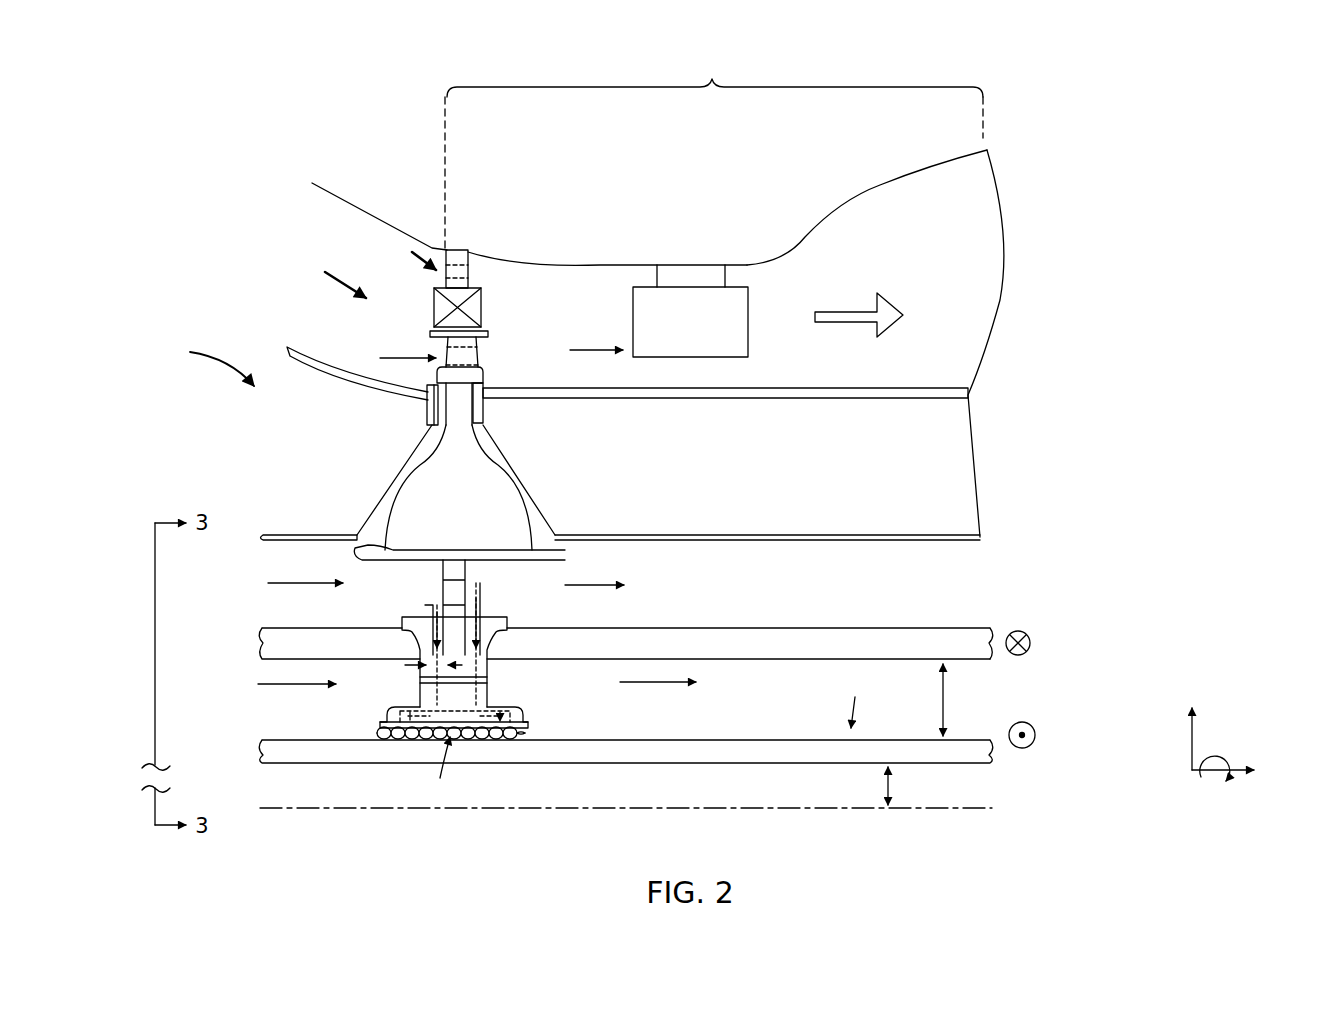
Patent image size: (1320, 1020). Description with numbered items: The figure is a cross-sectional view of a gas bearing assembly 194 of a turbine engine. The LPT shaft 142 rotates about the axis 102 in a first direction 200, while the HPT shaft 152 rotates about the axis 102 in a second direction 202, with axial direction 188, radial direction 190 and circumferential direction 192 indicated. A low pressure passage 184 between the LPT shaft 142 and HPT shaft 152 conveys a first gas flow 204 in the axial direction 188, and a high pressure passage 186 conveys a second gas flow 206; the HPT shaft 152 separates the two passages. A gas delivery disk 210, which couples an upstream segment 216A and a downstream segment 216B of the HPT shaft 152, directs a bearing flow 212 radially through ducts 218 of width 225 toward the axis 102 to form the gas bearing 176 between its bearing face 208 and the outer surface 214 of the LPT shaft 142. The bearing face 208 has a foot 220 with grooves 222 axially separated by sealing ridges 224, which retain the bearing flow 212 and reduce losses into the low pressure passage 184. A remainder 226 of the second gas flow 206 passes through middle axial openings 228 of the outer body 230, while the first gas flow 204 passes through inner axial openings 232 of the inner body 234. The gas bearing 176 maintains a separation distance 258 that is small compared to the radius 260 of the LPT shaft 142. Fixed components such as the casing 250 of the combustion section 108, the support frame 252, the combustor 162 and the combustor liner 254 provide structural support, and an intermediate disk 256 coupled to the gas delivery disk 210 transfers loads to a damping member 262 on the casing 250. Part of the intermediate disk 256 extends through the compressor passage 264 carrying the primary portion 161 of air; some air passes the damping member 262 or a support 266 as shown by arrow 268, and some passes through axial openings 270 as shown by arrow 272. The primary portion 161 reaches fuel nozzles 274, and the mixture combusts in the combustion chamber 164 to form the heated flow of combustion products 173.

The axis 102 is at (298, 811).
The combustion section 108 is at (714, 146).
The LPT shaft 142 is at (790, 752).
The HPT shaft 152 is at (766, 648).
The primary portion 161 is at (335, 288).
The combustor 162 is at (937, 160).
The combustion chamber 164 is at (874, 197).
The heated flow of combustion products 173 is at (845, 310).
The gas bearing 176 is at (375, 738).
The low pressure passage 184 is at (698, 722).
The high pressure passage 186 is at (750, 560).
The axial direction 188 is at (1232, 779).
The radial direction 190 is at (1193, 728).
The circumferential direction 192 is at (1194, 772).
The gas bearing assembly 194 is at (199, 362).
The first direction 200 is at (1022, 750).
The second direction 202 is at (1032, 645).
The first gas flow 204 is at (288, 686).
The second gas flow 206 is at (320, 583).
The bearing face 208 is at (433, 769).
The gas delivery disk 210 is at (500, 643).
The bearing flow 212 is at (480, 618).
The outer surface 214 is at (853, 699).
The upstream segment 216A is at (262, 641).
The downstream segment 216B is at (673, 645).
The ducts 218 is at (430, 618).
The foot 220 is at (378, 708).
The grooves 222 is at (473, 732).
The sealing ridges 224 is at (425, 738).
The width 225 is at (413, 658).
The remainder 226 is at (598, 585).
The middle axial openings 228 is at (458, 578).
The outer body 230 is at (443, 573).
The inner axial openings 232 is at (500, 694).
The inner body 234 is at (487, 666).
The casing 250 is at (574, 262).
The support frame 252 is at (273, 452).
The combustor liner 254 is at (914, 398).
The intermediate disk 256 is at (468, 483).
The separation distance 258 is at (945, 693).
The radius 260 is at (890, 783).
The damping member 262 is at (472, 311).
The compressor passage 264 is at (342, 213).
The support 266 is at (466, 248).
The arrow 268 is at (412, 250).
The axial openings 270 is at (462, 350).
The arrow 272 is at (400, 357).
The fuel nozzles 274 is at (748, 323).